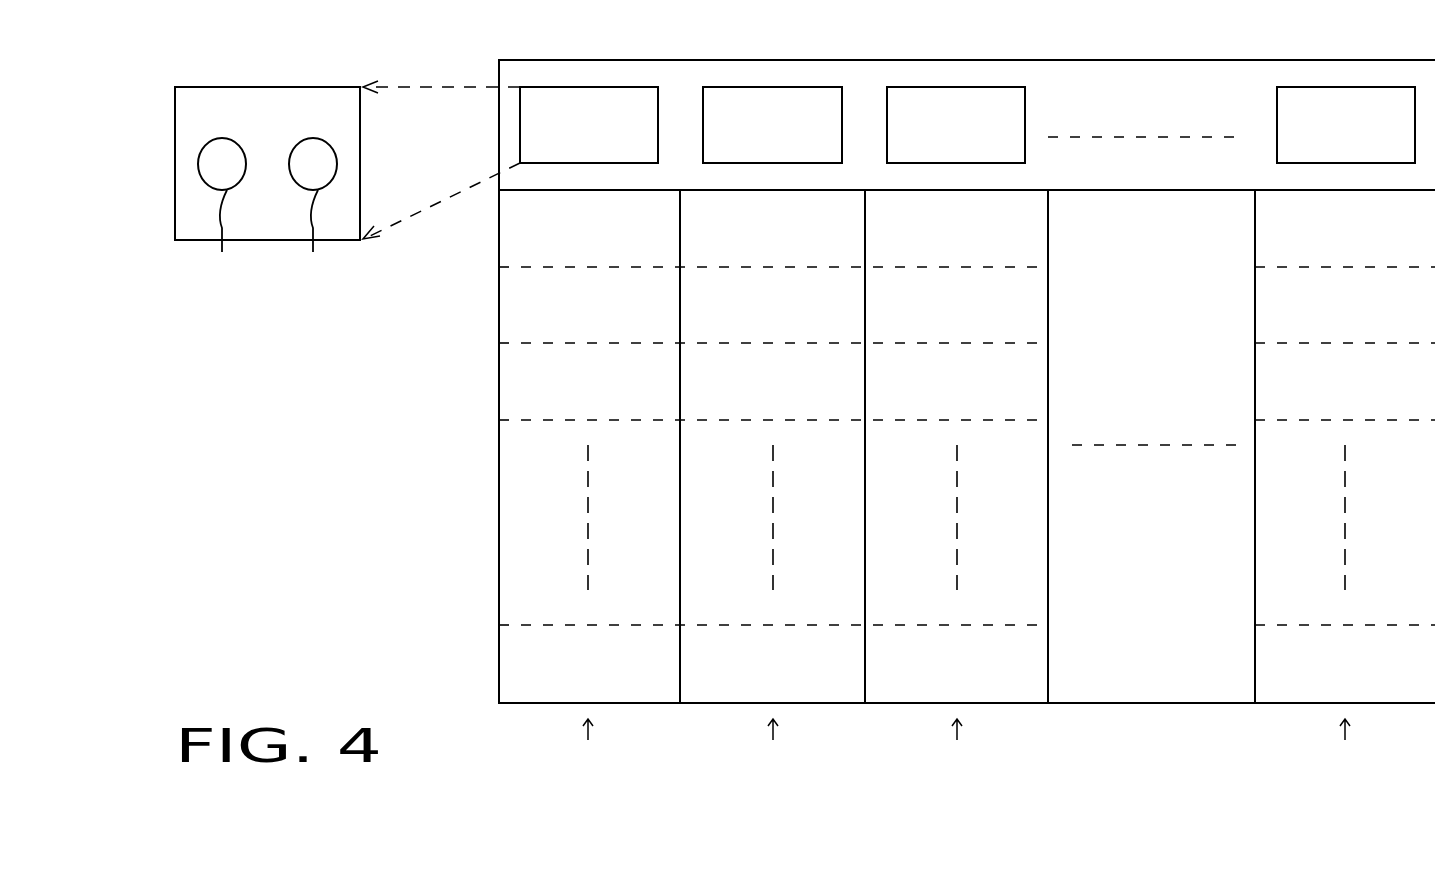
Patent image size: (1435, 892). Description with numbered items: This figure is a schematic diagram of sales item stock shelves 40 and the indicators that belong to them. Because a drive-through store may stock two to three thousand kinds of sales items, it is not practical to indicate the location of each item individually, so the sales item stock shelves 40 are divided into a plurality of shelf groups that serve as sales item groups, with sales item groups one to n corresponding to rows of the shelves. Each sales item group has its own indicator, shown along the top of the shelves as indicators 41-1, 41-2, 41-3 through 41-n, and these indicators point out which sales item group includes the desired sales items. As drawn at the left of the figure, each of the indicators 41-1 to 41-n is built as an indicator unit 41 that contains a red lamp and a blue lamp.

The sales item stock shelves 40 is at (873, 60).
The indicator unit 41 is at (255, 87).
The indicator 41-1 is at (589, 125).
The indicator 41-2 is at (772, 125).
The indicator 41-3 is at (956, 125).
The indicator 41-n is at (1346, 125).